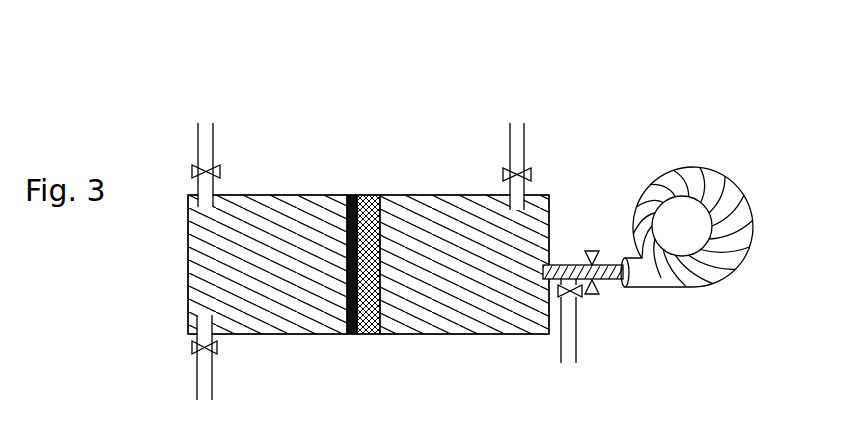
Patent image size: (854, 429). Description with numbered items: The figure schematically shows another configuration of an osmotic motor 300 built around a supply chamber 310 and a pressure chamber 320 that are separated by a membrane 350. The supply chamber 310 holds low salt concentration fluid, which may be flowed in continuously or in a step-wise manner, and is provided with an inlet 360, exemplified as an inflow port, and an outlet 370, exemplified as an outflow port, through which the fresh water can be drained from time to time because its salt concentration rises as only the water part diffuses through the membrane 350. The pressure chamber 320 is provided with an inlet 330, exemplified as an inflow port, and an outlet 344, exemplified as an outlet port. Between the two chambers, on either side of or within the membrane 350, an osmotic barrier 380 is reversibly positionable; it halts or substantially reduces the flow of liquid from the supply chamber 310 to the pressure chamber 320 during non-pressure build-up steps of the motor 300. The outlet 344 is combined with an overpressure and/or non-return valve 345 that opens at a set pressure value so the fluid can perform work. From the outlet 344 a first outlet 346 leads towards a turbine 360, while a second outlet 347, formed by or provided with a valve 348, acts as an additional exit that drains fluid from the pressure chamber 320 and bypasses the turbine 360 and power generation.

The motor 300 is at (115, 86).
The supply chamber 310 is at (297, 325).
The pressure chamber 320 is at (450, 322).
The inlet 330 is at (513, 158).
The outlet 344 is at (560, 264).
The overpressure and/or non-return valve 345 is at (594, 295).
The first outlet 346 is at (620, 282).
The second outlet 347 is at (565, 356).
The valve 348 is at (565, 300).
The membrane 350 is at (372, 195).
The inlet / turbine 360 is at (202, 155).
The outlet 370 is at (202, 383).
The osmotic barrier 380 is at (352, 195).